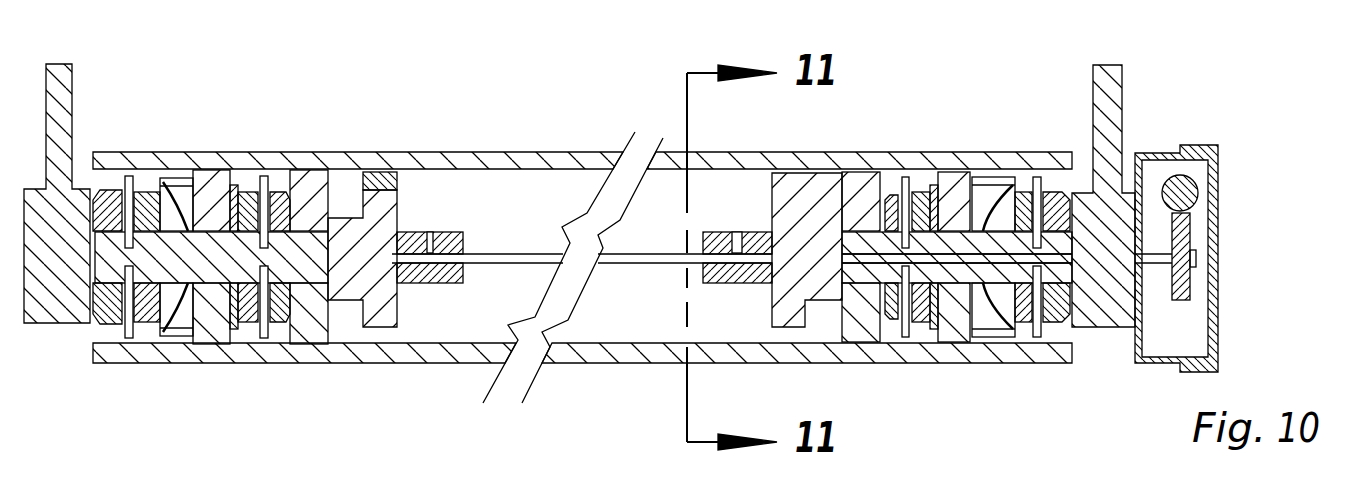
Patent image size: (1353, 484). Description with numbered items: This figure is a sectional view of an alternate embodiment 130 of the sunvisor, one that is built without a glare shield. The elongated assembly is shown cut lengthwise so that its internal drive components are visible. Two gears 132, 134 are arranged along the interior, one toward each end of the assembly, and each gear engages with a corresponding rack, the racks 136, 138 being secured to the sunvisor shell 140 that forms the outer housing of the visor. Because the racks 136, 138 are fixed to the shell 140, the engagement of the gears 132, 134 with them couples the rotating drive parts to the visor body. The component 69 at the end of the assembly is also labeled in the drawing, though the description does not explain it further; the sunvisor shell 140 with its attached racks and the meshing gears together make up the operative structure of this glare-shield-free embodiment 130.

The mounting bracket 69 is at (1219, 282).
The alternate embodiment of the sunvisor 130 is at (1238, 101).
The gear 132 is at (353, 222).
The gear 134 is at (807, 232).
The rack 136 is at (392, 168).
The rack 138 is at (800, 168).
The sunvisor shell 140 is at (510, 165).